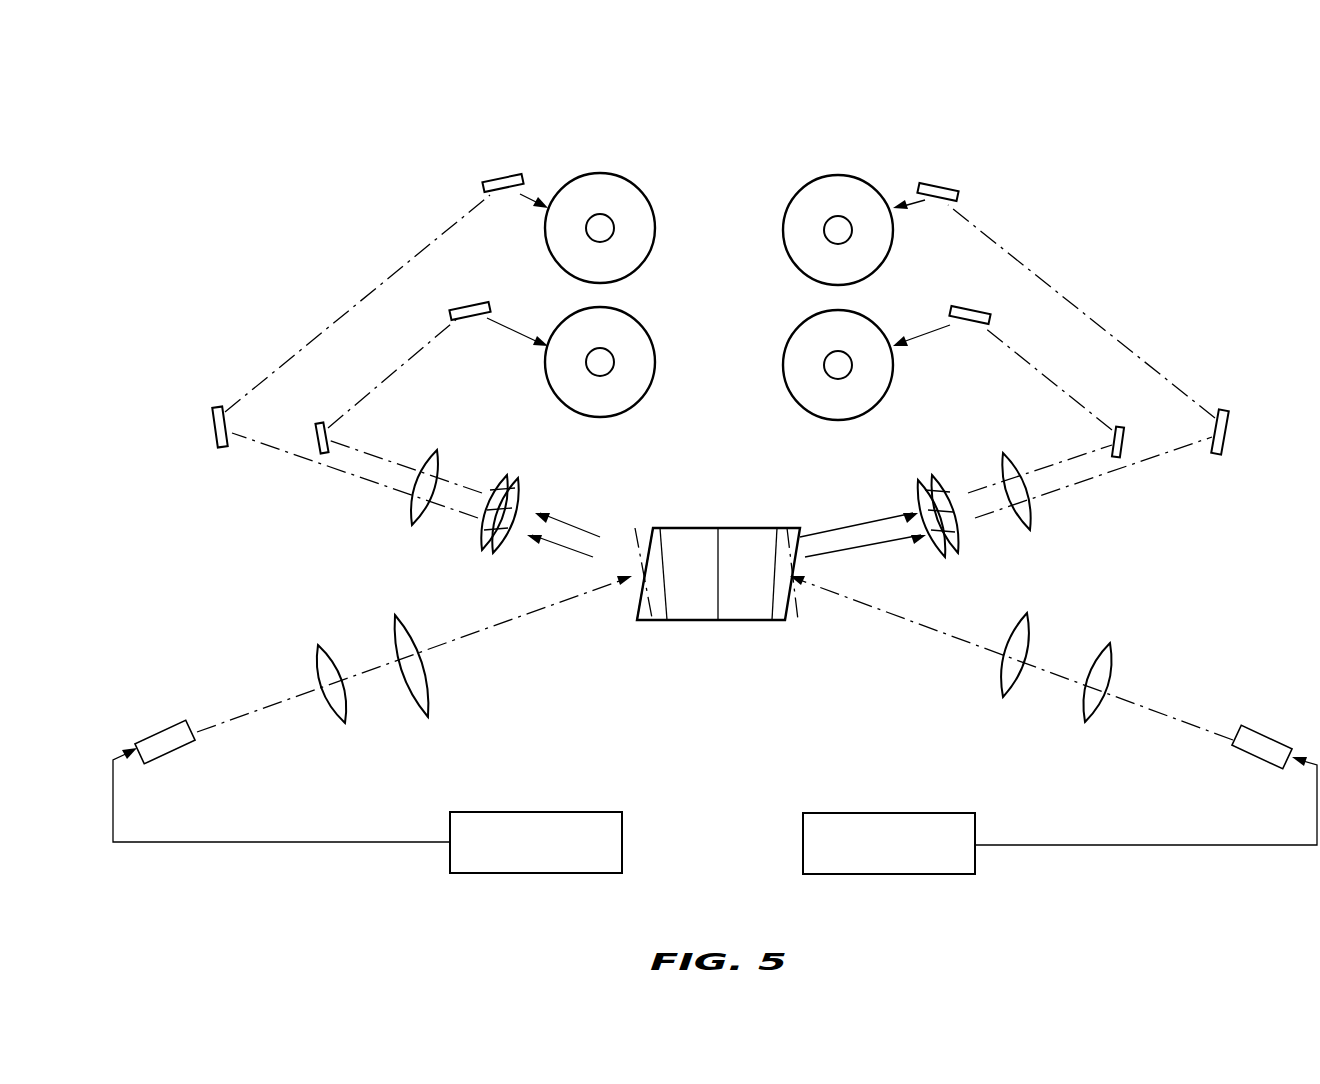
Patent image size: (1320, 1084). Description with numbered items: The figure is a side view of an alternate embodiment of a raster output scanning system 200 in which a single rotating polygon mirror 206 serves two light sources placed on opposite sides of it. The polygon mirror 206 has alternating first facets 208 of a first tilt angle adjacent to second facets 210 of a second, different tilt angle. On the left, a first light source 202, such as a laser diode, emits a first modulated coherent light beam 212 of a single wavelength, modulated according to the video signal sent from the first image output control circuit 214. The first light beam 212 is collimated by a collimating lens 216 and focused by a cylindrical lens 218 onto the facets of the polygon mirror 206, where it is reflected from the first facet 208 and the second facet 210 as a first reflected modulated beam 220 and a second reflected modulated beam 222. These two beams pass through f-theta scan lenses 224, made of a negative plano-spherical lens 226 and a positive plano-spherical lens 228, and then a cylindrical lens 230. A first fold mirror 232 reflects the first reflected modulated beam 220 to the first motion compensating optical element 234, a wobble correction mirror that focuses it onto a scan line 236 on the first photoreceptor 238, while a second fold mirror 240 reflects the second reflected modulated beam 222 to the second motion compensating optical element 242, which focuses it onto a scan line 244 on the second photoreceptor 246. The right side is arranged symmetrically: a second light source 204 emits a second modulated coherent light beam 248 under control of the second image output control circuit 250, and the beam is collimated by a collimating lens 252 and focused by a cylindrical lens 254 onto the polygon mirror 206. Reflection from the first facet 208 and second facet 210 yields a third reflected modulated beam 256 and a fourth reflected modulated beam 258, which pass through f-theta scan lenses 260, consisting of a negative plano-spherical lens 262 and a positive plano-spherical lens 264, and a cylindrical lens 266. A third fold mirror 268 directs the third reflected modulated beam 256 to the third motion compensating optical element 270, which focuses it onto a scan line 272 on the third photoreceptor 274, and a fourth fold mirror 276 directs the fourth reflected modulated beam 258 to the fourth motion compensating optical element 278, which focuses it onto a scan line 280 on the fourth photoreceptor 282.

The raster output scanning system 200 is at (765, 128).
The first light source 202 is at (158, 732).
The second light source 204 is at (1262, 737).
The rotating polygon mirror 206 is at (730, 630).
The first facet 208 is at (645, 560).
The second facet 210 is at (702, 553).
The first modulated coherent light beam 212 is at (308, 692).
The first image output control circuit 214 is at (558, 856).
The collimating lens 216 is at (330, 655).
The cylindrical lens 218 is at (420, 700).
The first reflected modulated beam 220 is at (528, 340).
The second reflected modulated beam 222 is at (525, 205).
The f-theta scan lenses 224 is at (555, 444).
The negative plano-spherical lens 226 is at (530, 497).
The positive plano-spherical lens 228 is at (480, 528).
The cylindrical lens 230 is at (428, 456).
The first fold mirror 232 is at (318, 425).
The first motion compensating optical element 234 is at (468, 304).
The scan line 236 is at (545, 350).
The first photoreceptor 238 is at (645, 350).
The second fold mirror 240 is at (214, 442).
The second motion compensating optical element 242 is at (486, 183).
The scan line 244 is at (545, 212).
The second photoreceptor 246 is at (645, 218).
The second modulated coherent light beam 248 is at (1125, 697).
The second image output control circuit 250 is at (908, 856).
The collimating lens 252 is at (1105, 652).
The cylindrical lens 254 is at (1008, 700).
The third reflected modulated beam 256 is at (915, 340).
The fourth reflected modulated beam 258 is at (915, 205).
The f-theta scan lenses 260 is at (942, 474).
The negative plano-spherical lens 262 is at (912, 497).
The positive plano-spherical lens 264 is at (960, 537).
The cylindrical lens 266 is at (1028, 522).
The third fold mirror 268 is at (1125, 430).
The third motion compensating optical element 270 is at (968, 306).
The scan line 272 is at (895, 350).
The third photoreceptor 274 is at (790, 388).
The fourth fold mirror 276 is at (1228, 410).
The fourth motion compensating optical element 278 is at (952, 185).
The scan line 280 is at (895, 212).
The fourth photoreceptor 282 is at (790, 258).